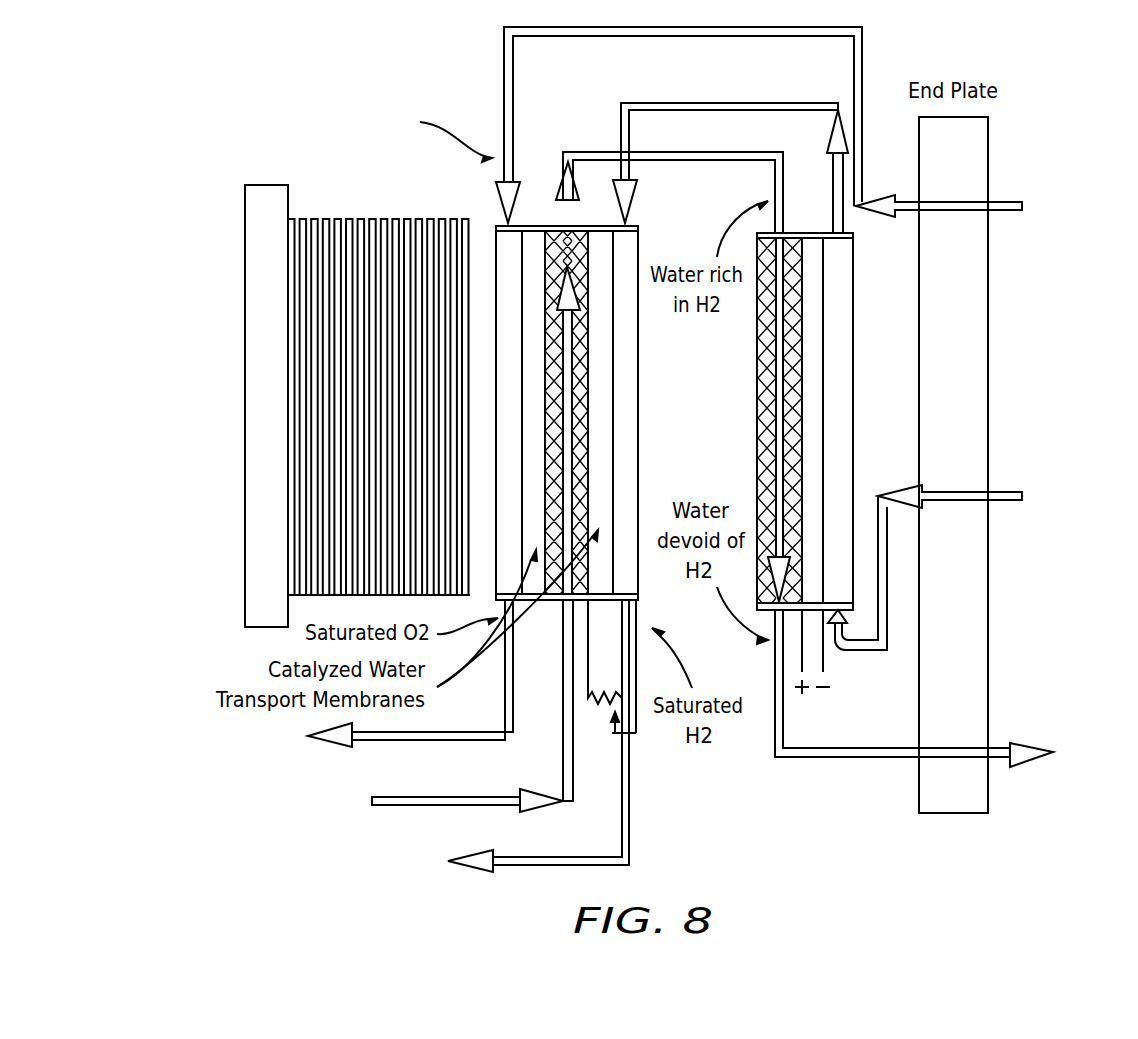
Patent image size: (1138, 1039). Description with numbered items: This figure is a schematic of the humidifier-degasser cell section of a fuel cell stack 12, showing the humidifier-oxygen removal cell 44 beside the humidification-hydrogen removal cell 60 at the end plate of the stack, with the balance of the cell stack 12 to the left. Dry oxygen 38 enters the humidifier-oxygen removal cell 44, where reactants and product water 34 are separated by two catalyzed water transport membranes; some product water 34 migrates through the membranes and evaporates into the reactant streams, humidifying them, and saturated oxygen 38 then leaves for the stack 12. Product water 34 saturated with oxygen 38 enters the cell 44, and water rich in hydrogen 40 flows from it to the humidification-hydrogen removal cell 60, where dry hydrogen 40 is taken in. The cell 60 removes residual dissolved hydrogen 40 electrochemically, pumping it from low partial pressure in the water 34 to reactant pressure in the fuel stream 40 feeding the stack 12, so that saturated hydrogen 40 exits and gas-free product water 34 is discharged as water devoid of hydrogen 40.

The fuel cell stack 12 is at (243, 94).
The humidifier-oxygen removal cell 44 is at (478, 92).
The oxidant/oxygen 38 is at (1003, 212).
The fuel/hydrogen 40 is at (1003, 502).
The product water 34 is at (412, 806).
The humidification-hydrogen removal cell 60 is at (716, 372).